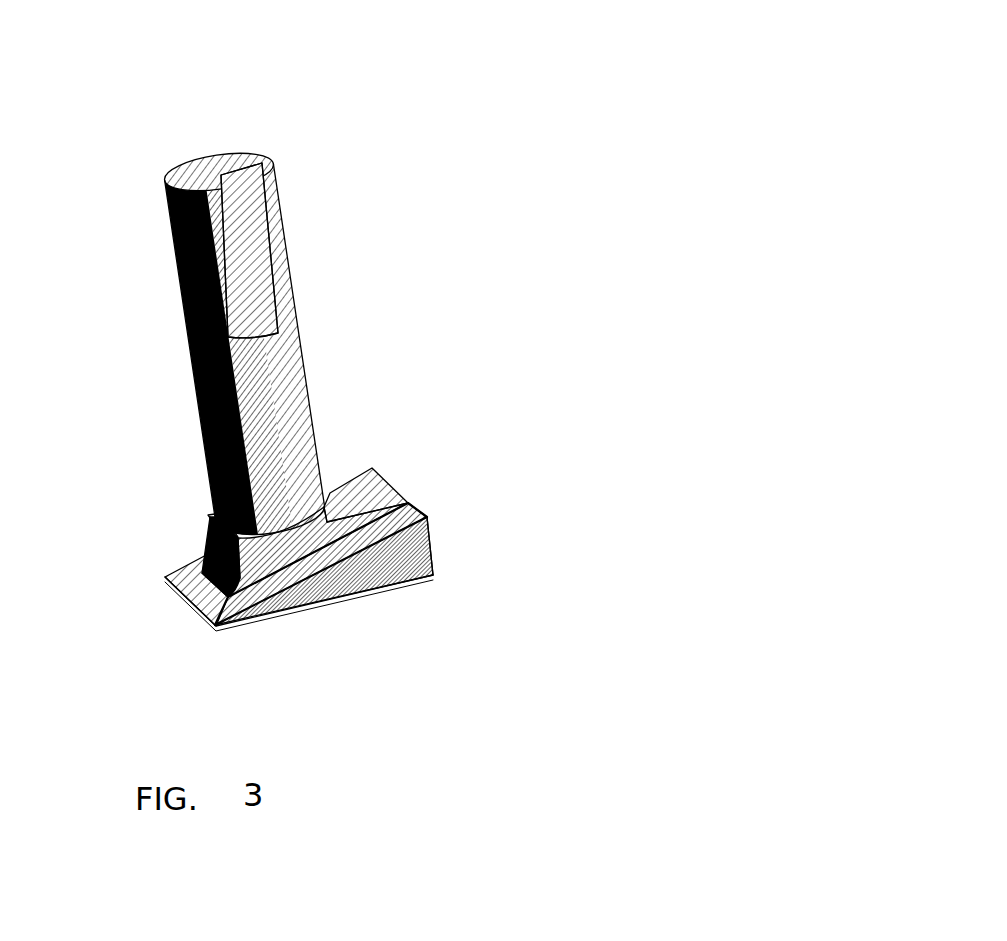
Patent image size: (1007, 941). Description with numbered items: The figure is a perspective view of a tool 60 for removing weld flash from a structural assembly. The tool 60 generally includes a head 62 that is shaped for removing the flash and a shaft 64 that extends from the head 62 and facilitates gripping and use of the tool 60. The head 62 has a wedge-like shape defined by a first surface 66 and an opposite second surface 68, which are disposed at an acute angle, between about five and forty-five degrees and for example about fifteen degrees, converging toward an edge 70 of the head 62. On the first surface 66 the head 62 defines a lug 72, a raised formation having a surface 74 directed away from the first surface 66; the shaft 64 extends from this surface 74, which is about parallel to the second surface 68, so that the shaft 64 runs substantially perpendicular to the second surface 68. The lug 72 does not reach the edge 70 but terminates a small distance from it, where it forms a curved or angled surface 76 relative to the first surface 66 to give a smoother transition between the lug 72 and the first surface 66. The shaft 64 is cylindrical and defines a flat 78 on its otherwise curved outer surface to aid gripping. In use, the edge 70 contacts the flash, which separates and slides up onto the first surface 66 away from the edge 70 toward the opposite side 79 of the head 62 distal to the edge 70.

The tool 60 is at (555, 113).
The head 62 is at (482, 525).
The shaft 64 is at (314, 278).
The first surface 66 is at (190, 568).
The second surface 68 is at (368, 597).
The edge 70 is at (187, 602).
The lug 72 is at (330, 530).
The surface of the lug 74 is at (375, 490).
The curved or angled surface 76 is at (212, 562).
The flat 78 is at (240, 225).
The opposite side of the head 79 is at (433, 548).